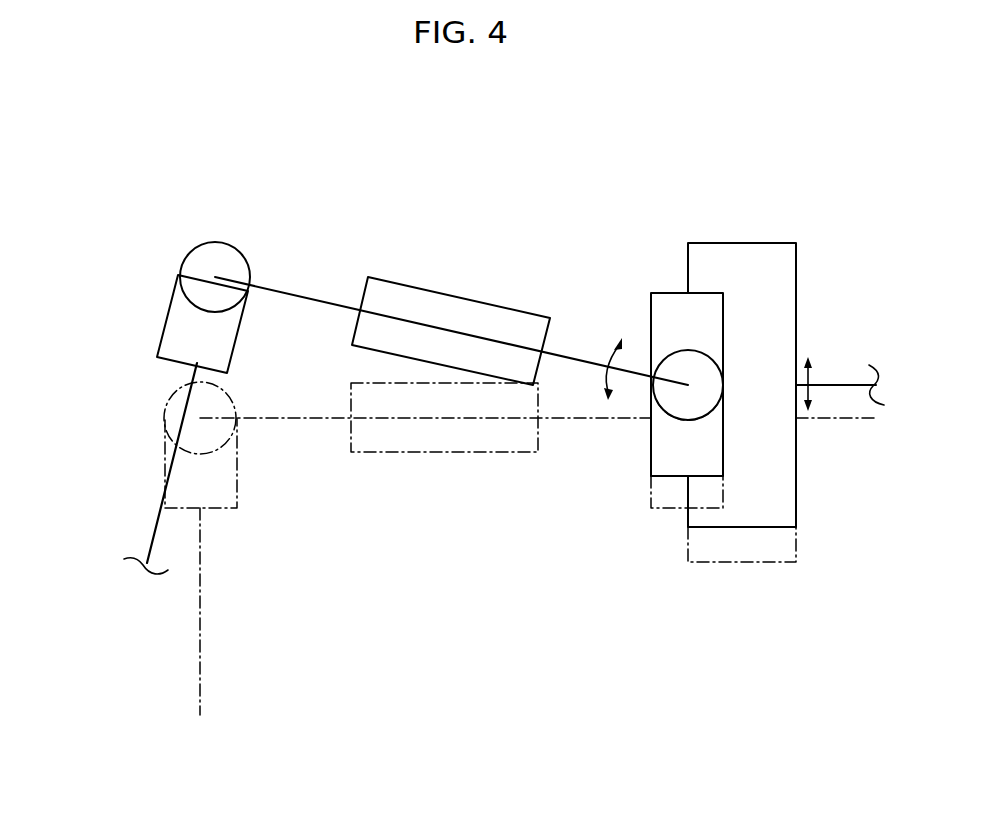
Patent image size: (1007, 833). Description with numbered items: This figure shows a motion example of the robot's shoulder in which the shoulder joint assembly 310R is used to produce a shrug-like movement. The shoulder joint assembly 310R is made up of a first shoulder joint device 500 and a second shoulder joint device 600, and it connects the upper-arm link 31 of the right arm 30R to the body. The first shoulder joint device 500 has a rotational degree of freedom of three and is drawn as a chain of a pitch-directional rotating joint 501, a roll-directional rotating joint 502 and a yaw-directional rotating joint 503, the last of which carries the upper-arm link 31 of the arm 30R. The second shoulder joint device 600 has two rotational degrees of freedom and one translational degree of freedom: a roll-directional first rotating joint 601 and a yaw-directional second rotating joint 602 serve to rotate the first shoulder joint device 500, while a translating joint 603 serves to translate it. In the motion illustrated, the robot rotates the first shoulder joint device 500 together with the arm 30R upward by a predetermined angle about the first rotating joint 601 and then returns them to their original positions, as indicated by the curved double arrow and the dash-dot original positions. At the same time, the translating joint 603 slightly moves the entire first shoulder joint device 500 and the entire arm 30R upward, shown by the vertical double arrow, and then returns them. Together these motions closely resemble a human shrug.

The shoulder joint assembly 310R is at (628, 153).
The first shoulder joint device 500 is at (509, 227).
The pitch-directional rotating joint 501 is at (447, 300).
The roll-directional rotating joint 502 is at (205, 243).
The yaw-directional rotating joint 503 is at (173, 321).
The second shoulder joint device 600 is at (655, 240).
The roll-directional rotating joint 601 is at (667, 402).
The yaw-directional second rotating joint 602 is at (651, 308).
The translating joint 603 is at (796, 283).
The arm 30R is at (100, 365).
The upper-arm link 31 is at (182, 408).